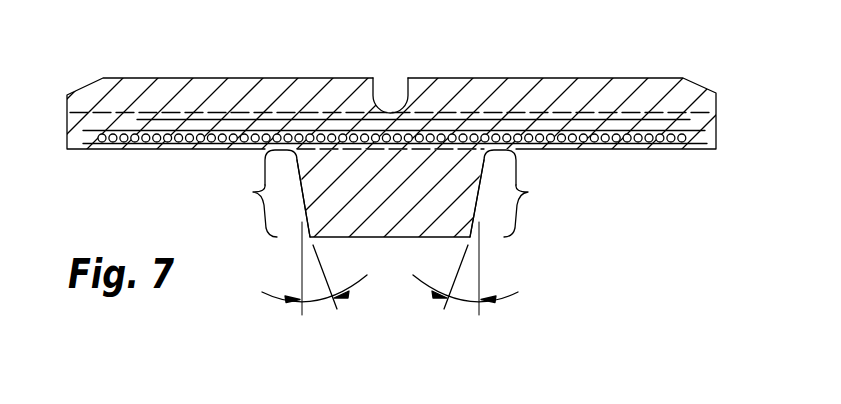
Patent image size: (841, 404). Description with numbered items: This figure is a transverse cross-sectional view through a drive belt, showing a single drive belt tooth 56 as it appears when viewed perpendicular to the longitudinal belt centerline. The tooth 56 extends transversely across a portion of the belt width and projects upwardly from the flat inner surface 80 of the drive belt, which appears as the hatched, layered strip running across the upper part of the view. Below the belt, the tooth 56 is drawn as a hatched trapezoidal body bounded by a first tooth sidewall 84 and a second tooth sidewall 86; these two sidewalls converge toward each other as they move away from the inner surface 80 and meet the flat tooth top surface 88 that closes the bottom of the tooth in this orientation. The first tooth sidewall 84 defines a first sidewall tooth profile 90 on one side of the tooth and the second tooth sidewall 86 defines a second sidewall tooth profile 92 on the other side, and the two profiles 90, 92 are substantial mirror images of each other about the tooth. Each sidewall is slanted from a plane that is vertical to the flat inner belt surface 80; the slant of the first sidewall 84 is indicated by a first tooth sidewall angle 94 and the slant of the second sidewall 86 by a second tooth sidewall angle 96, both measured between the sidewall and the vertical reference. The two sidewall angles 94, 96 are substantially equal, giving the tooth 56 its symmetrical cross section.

The drive belt tooth 56 is at (390, 197).
The flat inner surface 80 is at (640, 152).
The first tooth sidewall 84 is at (481, 191).
The second tooth sidewall 86 is at (300, 198).
The tooth top surface 88 is at (397, 238).
The first sidewall tooth profile 90 is at (246, 210).
The second sidewall tooth profile 92 is at (531, 210).
The first tooth sidewall angle 94 is at (320, 303).
The second tooth sidewall angle 96 is at (460, 303).